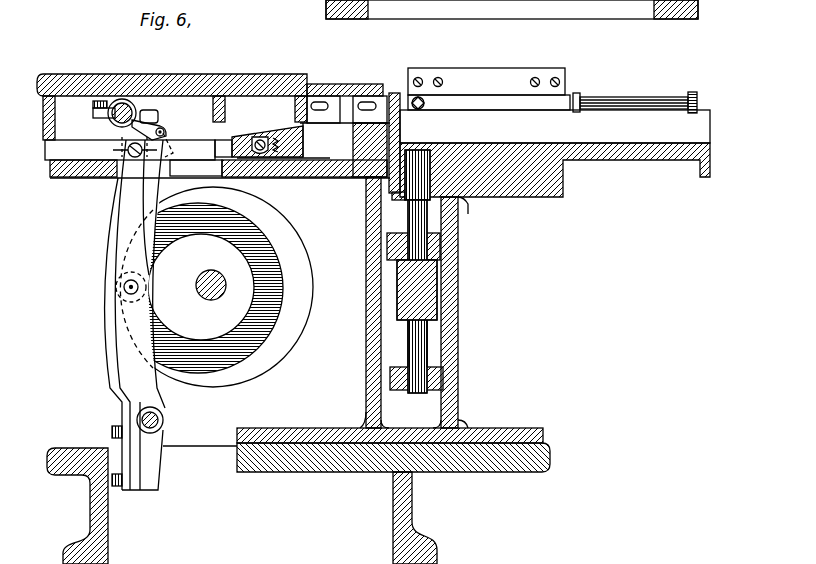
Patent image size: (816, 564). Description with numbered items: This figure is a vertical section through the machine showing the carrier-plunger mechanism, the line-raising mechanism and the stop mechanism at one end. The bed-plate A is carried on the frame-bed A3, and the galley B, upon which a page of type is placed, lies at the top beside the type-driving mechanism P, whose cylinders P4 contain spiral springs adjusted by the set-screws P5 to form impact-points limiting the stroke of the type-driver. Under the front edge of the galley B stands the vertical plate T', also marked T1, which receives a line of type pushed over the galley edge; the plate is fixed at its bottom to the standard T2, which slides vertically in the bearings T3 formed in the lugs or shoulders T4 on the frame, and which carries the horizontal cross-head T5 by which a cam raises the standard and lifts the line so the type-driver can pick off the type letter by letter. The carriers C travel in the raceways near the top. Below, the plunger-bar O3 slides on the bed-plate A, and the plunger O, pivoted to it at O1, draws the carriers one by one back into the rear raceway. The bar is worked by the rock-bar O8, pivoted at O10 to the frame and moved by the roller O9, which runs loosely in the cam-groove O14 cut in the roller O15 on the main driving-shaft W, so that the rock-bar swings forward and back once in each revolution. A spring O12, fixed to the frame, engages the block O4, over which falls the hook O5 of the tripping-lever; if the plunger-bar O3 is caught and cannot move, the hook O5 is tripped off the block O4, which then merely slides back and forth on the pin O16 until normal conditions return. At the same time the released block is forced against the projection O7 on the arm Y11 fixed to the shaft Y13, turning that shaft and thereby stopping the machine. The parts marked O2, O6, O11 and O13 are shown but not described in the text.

The shaft Y13 is at (113, 107).
The arm Y11 is at (125, 101).
The projection O7 is at (147, 110).
The hook of tripping-lever O5 is at (170, 133).
The pawl (alternate position) O6 is at (167, 147).
The plunger-bar O3 is at (192, 150).
The block O4 is at (123, 143).
The plunger O is at (261, 138).
The slot O2 is at (303, 140).
The carrier C is at (330, 97).
The vertical plate T' is at (402, 126).
The type-driving mechanism P is at (489, 89).
The cylinder P4 is at (630, 100).
The set-screw P5 is at (697, 100).
The vertical plate T1 is at (398, 140).
The galley B is at (555, 126).
The bed-plate A is at (436, 307).
The pivot O1 is at (262, 158).
The bracket O13 is at (340, 152).
The pin O16 is at (102, 178).
The rock-bar O8 is at (136, 289).
The main driving-shaft W is at (207, 275).
The roller O9 is at (138, 288).
The spring O12 is at (102, 315).
The cam-groove roller O15 is at (285, 328).
The cam-groove O14 is at (247, 332).
The standard T2 is at (412, 217).
The lug T4 is at (390, 250).
The cross-head T5 is at (403, 285).
The bearing T3 is at (412, 363).
The screws O11 is at (127, 422).
The pivot O10 is at (163, 420).
The frame-bed A3 is at (92, 515).